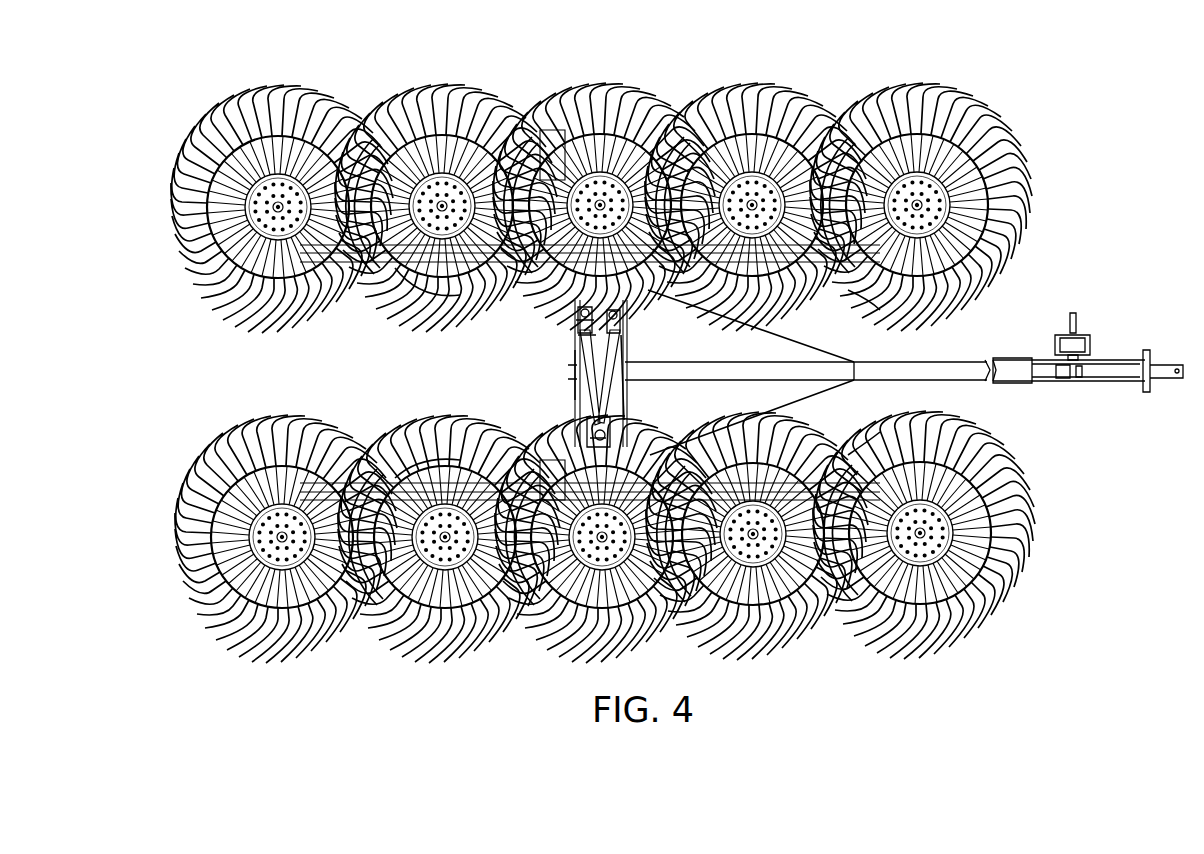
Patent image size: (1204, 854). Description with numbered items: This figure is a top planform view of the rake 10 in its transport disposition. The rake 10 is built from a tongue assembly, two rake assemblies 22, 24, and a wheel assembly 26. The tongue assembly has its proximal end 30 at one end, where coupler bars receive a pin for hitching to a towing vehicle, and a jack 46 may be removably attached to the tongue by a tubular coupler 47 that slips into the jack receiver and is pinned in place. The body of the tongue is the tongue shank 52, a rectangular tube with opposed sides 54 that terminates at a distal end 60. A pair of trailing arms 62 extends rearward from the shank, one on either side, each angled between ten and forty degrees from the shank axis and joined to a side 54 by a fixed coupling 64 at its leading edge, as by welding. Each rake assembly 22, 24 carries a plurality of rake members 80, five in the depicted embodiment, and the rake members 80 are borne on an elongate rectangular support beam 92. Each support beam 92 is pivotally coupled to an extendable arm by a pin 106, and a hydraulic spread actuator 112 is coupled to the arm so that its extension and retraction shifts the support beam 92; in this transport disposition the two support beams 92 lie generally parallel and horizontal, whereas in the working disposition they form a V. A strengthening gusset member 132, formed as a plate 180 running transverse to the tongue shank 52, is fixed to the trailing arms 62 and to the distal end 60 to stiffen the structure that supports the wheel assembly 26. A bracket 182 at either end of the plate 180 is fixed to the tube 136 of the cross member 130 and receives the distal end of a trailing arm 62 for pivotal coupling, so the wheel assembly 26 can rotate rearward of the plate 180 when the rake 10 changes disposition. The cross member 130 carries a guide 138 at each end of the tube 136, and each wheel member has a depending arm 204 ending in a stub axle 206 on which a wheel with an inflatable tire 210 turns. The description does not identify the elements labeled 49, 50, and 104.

The rake 10 is at (228, 668).
The rake assembly 22 is at (205, 98).
The rake assembly 24 is at (470, 612).
The wheel assembly 26 is at (572, 397).
The proximal end 30 is at (1148, 386).
The jack 46 is at (1060, 338).
The coupler 47 is at (1070, 357).
The jack mount 49 is at (1092, 348).
The tongue 50 is at (907, 362).
The tongue shank 52 is at (1000, 378).
The sides 54 is at (962, 362).
The distal end 60 is at (650, 366).
The trailing arms 62 is at (790, 414).
The fixed coupling 64 is at (856, 374).
The rake members 80 is at (288, 130).
The support beam 92 is at (868, 305).
The pivot pin 104 is at (618, 310).
The pin 106 is at (580, 313).
The spread actuator 112 is at (590, 385).
The cross member 130 is at (575, 369).
The strengthening gusset member 132 is at (625, 350).
The tube 136 is at (586, 430).
The guide 138 is at (552, 128).
The plate 180 is at (590, 333).
The bracket 182 is at (578, 323).
The depending arm 204 is at (452, 118).
The stub axle 206 is at (445, 135).
The inflatable tire 210 is at (445, 300).